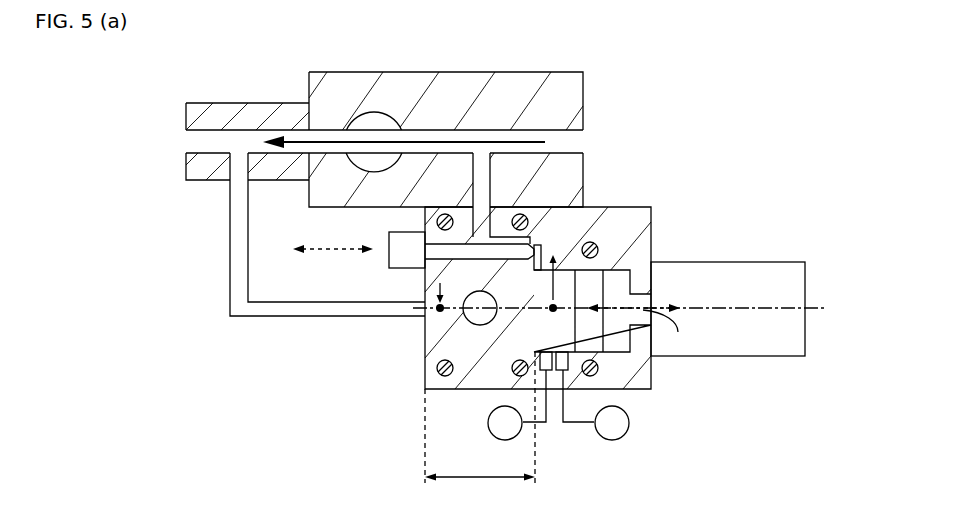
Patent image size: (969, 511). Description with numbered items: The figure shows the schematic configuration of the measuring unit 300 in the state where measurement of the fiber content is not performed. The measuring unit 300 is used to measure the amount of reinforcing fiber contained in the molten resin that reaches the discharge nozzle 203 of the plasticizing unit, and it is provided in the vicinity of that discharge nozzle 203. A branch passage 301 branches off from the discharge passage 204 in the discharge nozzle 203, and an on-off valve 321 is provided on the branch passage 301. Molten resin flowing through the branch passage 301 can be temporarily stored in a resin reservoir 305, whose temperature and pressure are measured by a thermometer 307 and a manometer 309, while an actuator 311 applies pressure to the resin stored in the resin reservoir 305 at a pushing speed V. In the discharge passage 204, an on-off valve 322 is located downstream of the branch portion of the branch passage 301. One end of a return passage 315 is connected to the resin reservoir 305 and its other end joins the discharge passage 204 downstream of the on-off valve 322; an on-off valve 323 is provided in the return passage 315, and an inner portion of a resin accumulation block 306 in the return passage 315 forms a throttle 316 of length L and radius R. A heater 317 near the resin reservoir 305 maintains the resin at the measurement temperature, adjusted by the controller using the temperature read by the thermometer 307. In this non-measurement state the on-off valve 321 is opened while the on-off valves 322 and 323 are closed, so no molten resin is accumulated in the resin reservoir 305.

The measuring unit 300 is at (684, 67).
The discharge nozzle 203 is at (438, 75).
The discharge passage 204 is at (560, 131).
The on-off valve 322 is at (378, 110).
The branch passage 301 is at (482, 181).
The resin reservoir 305 is at (652, 366).
The throttle 316 is at (428, 282).
The on-off valve 321 is at (388, 242).
The return passage 315 is at (283, 317).
The resin accumulation block 306 is at (423, 323).
The on-off valve 323 is at (462, 322).
The heater 317 is at (437, 374).
The actuator 311 is at (715, 262).
The manometer 309 is at (515, 437).
The thermometer 307 is at (627, 433).